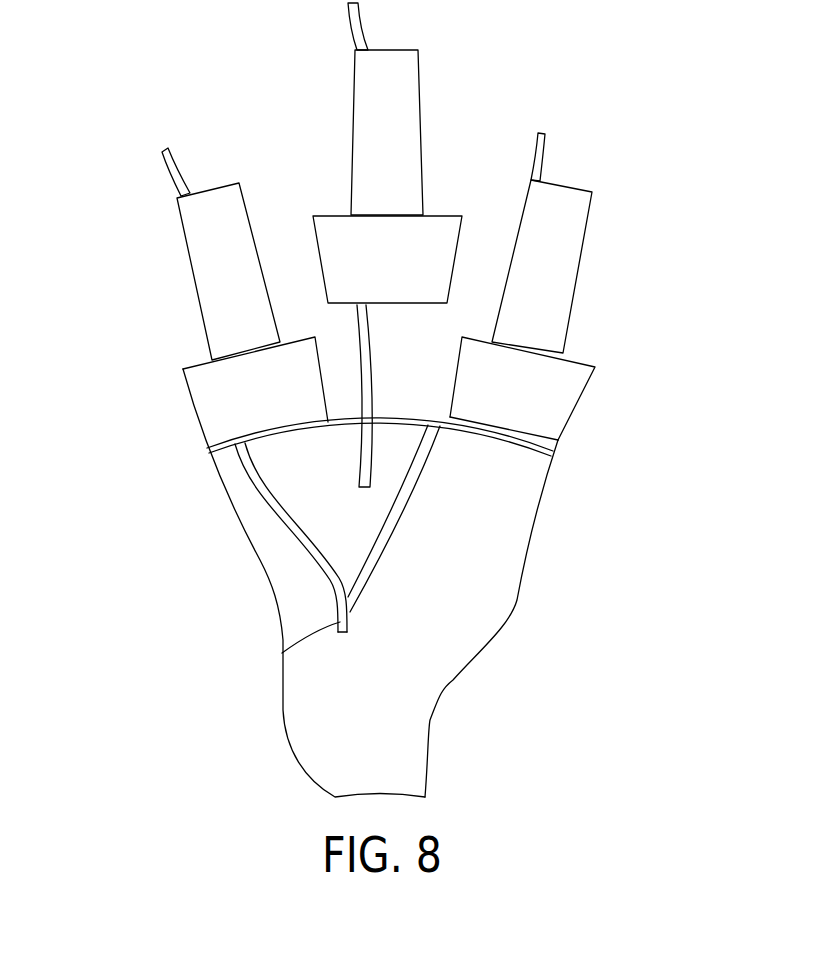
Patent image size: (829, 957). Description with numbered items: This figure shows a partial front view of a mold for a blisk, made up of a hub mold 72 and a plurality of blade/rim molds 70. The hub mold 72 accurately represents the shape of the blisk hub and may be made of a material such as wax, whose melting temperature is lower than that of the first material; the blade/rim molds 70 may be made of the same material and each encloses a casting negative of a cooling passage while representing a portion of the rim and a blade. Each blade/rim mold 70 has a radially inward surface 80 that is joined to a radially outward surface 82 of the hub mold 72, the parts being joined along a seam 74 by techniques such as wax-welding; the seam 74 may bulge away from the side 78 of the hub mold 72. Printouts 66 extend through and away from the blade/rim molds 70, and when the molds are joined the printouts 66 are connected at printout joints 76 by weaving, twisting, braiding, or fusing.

The printouts 66 is at (165, 163).
The blade/rim molds 70 is at (162, 284).
The hub mold 72 is at (391, 571).
The seam 74 is at (508, 440).
The printout joints 76 is at (282, 653).
The side 78 is at (520, 500).
The radially inward surface 80 is at (347, 306).
The radially outward surface 82 is at (397, 420).